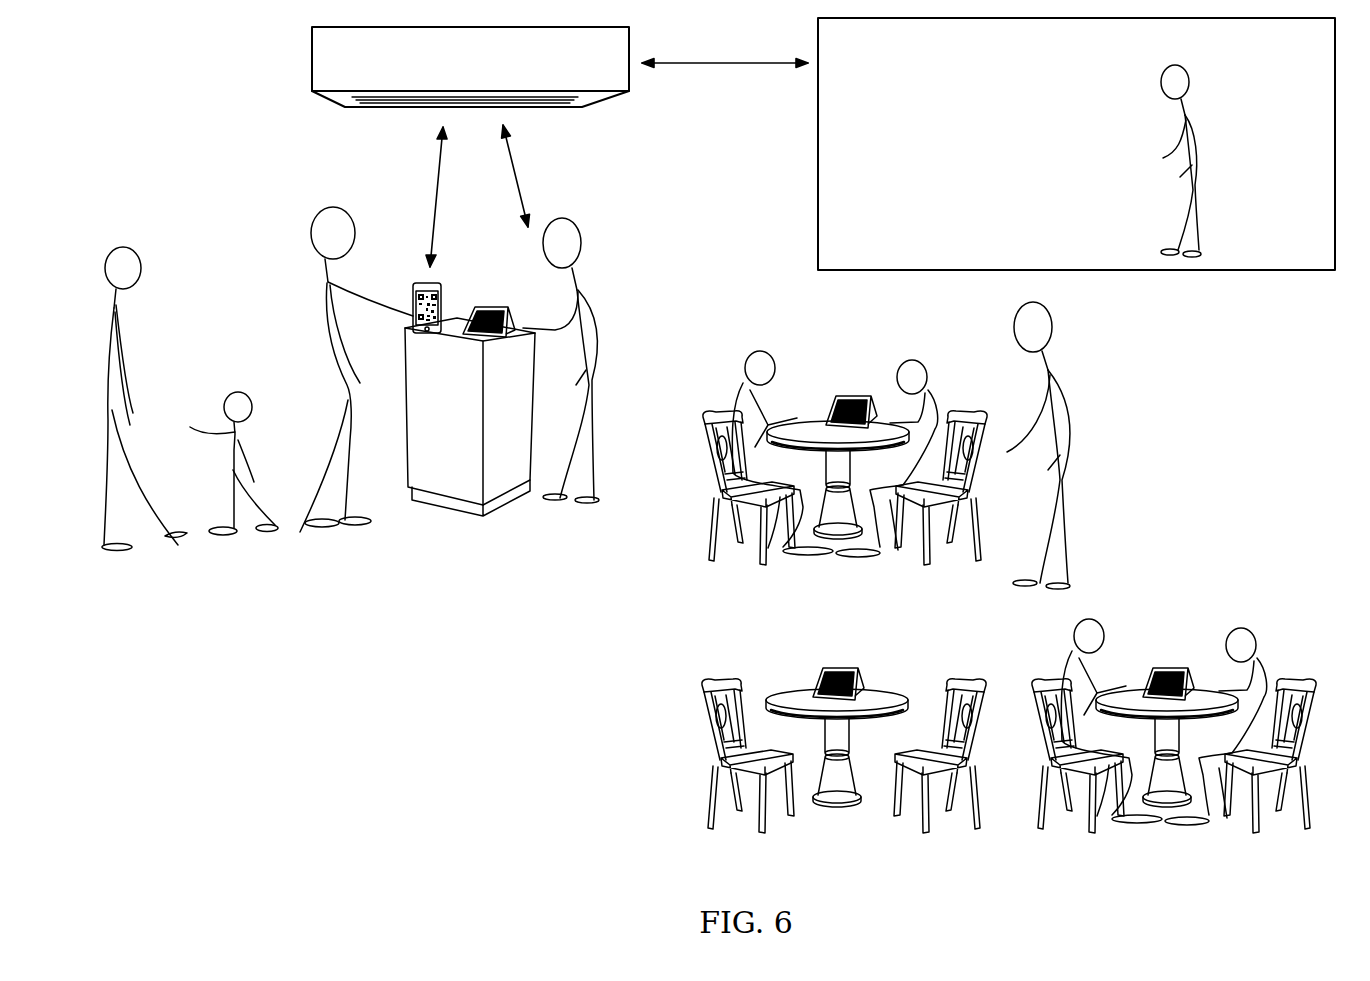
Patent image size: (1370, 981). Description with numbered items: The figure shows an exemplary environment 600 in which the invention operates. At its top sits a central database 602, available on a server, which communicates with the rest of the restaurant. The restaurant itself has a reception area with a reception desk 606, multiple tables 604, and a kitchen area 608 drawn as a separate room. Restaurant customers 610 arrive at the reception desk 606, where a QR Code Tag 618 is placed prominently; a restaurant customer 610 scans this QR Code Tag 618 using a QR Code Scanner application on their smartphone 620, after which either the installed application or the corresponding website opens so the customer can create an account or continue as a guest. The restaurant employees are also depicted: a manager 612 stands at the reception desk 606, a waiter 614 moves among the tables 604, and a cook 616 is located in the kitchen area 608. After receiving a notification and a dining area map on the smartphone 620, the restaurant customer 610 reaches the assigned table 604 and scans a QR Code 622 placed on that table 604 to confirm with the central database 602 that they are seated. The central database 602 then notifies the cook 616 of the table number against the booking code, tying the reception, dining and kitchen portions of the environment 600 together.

The environment 600 is at (718, 425).
The central database 602 is at (470, 67).
The table 604 is at (818, 422).
The reception desk 606 is at (449, 501).
The kitchen area 608 is at (1076, 144).
The restaurant customer 610 is at (165, 532).
The manager 612 is at (567, 496).
The waiter 614 is at (1062, 483).
The cook 616 is at (1195, 183).
The QR Code Tag 618 is at (497, 318).
The smartphone 620 is at (424, 287).
The QR Code 622 is at (838, 682).